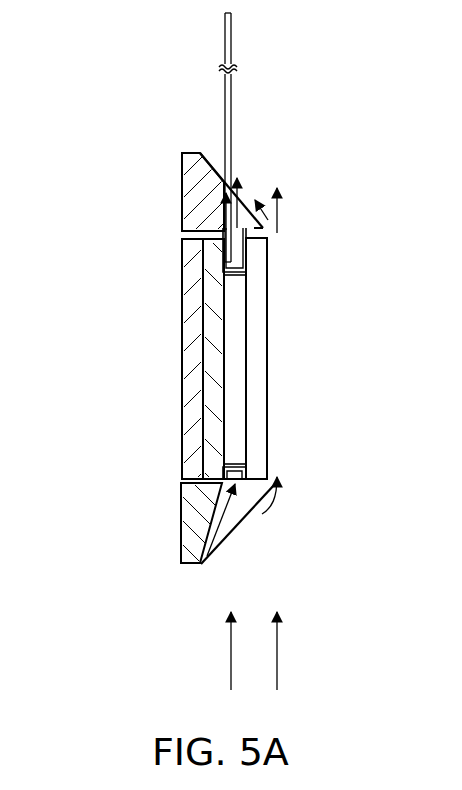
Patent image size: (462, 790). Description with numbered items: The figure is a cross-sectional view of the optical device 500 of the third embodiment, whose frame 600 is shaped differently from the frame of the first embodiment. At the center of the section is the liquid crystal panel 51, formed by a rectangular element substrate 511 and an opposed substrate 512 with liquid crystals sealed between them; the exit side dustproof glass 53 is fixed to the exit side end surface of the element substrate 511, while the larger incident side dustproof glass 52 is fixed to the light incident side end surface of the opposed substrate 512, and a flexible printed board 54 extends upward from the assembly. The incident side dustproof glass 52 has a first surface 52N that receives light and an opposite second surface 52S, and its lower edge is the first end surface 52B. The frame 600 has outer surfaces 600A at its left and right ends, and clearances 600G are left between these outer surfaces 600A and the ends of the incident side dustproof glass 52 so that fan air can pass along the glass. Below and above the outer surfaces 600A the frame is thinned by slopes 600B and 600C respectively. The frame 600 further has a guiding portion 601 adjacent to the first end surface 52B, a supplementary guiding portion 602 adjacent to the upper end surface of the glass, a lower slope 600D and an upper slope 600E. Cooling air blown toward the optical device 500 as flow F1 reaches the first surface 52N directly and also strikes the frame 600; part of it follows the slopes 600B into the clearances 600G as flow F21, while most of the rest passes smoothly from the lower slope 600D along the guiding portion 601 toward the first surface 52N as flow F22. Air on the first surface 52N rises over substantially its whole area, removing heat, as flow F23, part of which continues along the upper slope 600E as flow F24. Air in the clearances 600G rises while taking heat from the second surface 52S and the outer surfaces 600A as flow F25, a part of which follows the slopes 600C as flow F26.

The optical device 500 is at (148, 87).
The flexible printed board 54 is at (233, 32).
The frame 600 is at (182, 177).
The outer surface 600A is at (247, 282).
The slope 600B is at (202, 566).
The slope 600C is at (203, 156).
The lower slope 600D is at (258, 518).
The upper slope 600E is at (247, 204).
The clearance 600G is at (243, 463).
The guiding portion 601 is at (265, 468).
The supplementary guiding portion 602 is at (247, 258).
The liquid crystal panel 51 is at (145, 359).
The element substrate 511 is at (211, 294).
The opposed substrate 512 is at (235, 335).
The exit side dustproof glass 53 is at (191, 264).
The incident side dustproof glass 52 is at (297, 392).
The first surface 52N is at (267, 334).
The second surface 52S is at (233, 370).
The first end surface 52B is at (252, 486).
The flow F1 is at (231, 655).
The flow F21 is at (212, 537).
The flow F22 is at (279, 500).
The flow F23 is at (279, 212).
The flow F24 is at (268, 195).
The flow F25 is at (240, 188).
The flow F26 is at (223, 214).